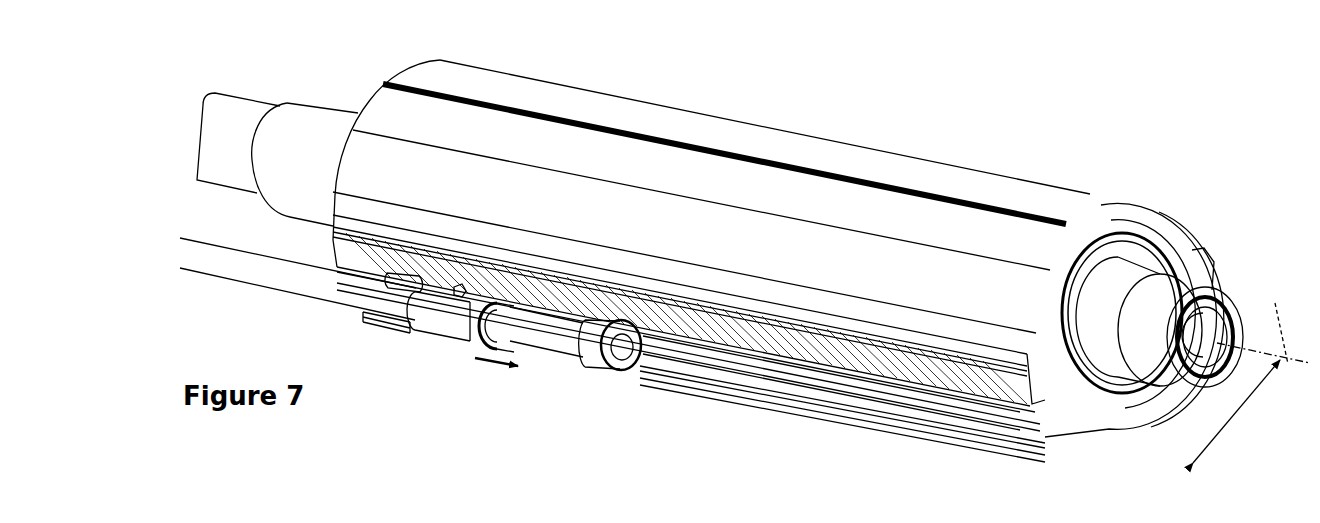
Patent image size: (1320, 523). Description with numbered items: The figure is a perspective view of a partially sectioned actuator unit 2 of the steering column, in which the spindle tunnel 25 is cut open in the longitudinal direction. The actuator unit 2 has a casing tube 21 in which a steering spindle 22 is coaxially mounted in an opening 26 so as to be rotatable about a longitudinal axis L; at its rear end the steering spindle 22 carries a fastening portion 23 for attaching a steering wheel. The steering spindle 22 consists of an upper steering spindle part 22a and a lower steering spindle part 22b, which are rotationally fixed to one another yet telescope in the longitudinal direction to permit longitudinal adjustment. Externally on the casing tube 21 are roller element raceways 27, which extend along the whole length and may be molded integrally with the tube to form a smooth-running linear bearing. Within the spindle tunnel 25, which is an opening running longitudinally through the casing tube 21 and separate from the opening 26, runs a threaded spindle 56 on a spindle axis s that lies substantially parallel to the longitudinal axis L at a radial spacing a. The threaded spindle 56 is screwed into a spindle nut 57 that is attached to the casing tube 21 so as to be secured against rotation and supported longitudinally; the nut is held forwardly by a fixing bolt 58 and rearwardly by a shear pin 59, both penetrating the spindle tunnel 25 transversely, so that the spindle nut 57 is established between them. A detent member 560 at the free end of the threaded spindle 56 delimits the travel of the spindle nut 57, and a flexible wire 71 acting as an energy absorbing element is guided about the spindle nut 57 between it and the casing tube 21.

The actuator unit 2 is at (727, 92).
The casing tube 21 is at (784, 138).
The steering spindle 22 is at (296, 85).
The upper steering spindle part 22a is at (331, 112).
The lower steering spindle part 22b is at (242, 110).
The fastening portion 23 is at (1193, 277).
The spindle tunnel 25 is at (1042, 440).
The opening 26 is at (1150, 412).
The roller element raceways 27 is at (600, 158).
The threaded spindle 56 is at (290, 278).
The spindle nut 57 is at (457, 323).
The fixing bolt 58 is at (380, 318).
The shear pin 59 is at (458, 294).
The flexible wire 71 is at (360, 282).
The detent member 560 is at (597, 363).
The longitudinal axis L is at (1263, 325).
The spacing a is at (1237, 420).
The spindle axis s is at (1153, 455).